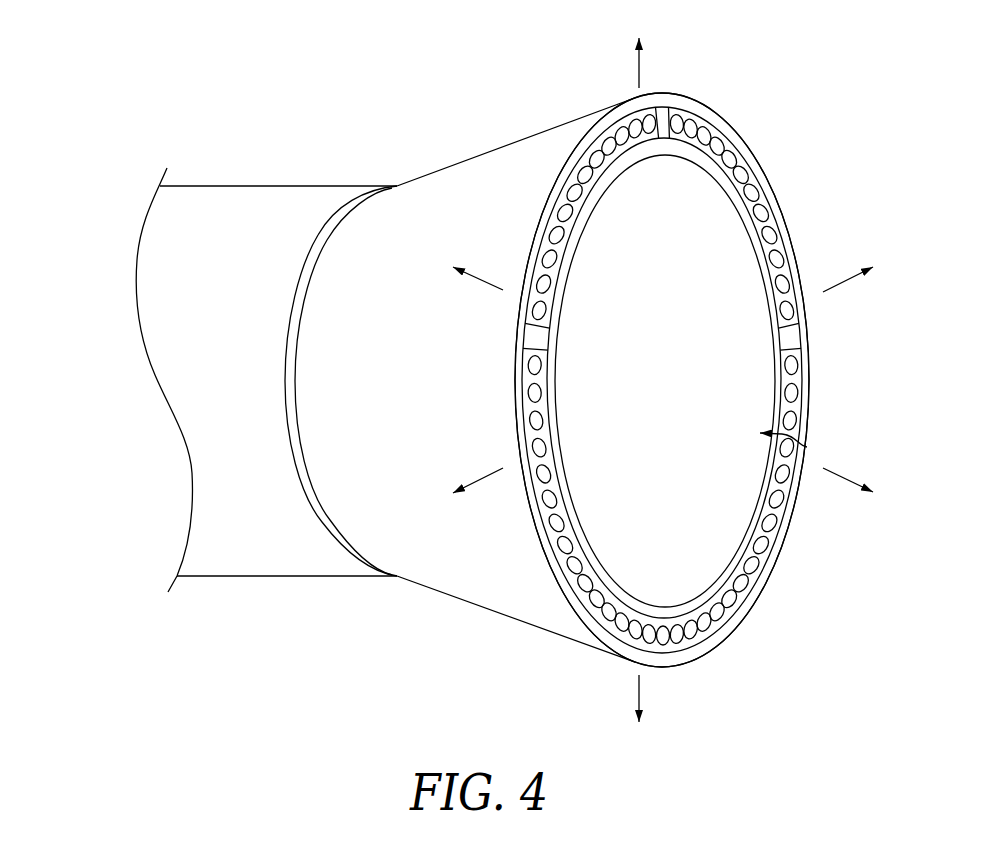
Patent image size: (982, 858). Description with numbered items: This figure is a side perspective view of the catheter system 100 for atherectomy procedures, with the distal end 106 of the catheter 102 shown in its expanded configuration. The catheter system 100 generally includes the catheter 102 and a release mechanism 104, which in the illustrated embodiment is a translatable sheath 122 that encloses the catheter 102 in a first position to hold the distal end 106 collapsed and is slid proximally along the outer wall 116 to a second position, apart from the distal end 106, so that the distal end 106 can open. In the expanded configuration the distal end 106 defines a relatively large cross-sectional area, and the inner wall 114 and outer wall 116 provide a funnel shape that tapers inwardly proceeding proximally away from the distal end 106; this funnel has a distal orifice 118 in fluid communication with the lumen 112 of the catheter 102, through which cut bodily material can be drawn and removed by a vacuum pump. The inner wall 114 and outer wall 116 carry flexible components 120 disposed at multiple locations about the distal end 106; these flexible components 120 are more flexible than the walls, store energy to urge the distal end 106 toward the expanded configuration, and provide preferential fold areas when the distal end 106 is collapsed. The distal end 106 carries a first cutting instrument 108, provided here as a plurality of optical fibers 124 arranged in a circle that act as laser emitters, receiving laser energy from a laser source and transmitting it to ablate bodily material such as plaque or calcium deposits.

The catheter system 100 is at (121, 116).
The catheter 102 is at (478, 157).
The release mechanism 104 is at (271, 185).
The distal end 106 is at (593, 113).
The first cutting instrument 108 is at (740, 150).
The lumen 112 is at (807, 447).
The inner wall 114 is at (779, 377).
The outer wall 116 is at (812, 377).
The distal orifice 118 is at (723, 572).
The flexible component 120 is at (663, 108).
The sheath 122 is at (383, 185).
The optical fibers 124 is at (785, 503).